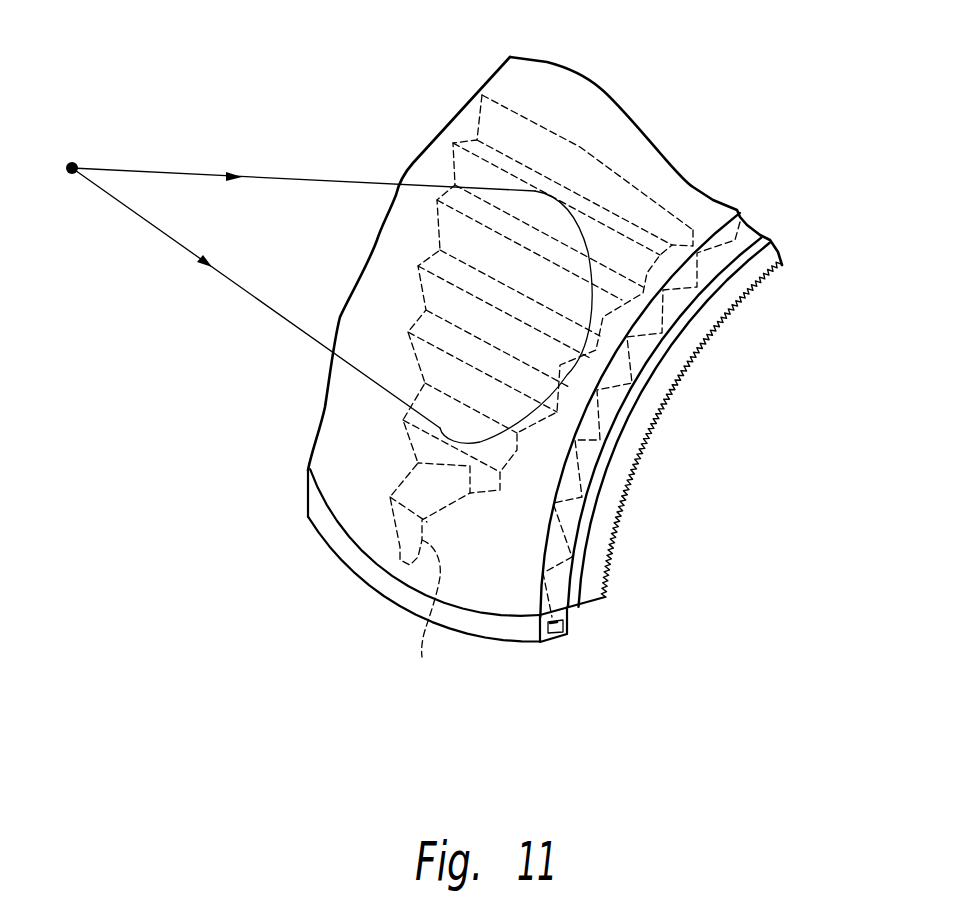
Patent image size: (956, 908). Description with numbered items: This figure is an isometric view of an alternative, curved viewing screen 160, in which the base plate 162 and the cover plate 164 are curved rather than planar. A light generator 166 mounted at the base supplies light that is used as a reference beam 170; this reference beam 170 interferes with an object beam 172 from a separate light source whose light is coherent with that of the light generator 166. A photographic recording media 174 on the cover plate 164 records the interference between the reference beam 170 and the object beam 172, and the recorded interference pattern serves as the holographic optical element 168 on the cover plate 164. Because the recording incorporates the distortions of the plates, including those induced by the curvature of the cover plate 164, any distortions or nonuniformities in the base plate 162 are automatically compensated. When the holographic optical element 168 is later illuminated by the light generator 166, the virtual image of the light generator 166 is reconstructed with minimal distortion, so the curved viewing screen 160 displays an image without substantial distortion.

The viewing screen 160 is at (697, 117).
The base plate 162 is at (508, 610).
The cover plate 164 is at (680, 383).
The light generator 166 is at (570, 622).
The holographic optical element 168 is at (540, 290).
The reference beam 170 is at (427, 613).
The object beam 172 is at (180, 243).
The photographic recording media 174 is at (625, 463).